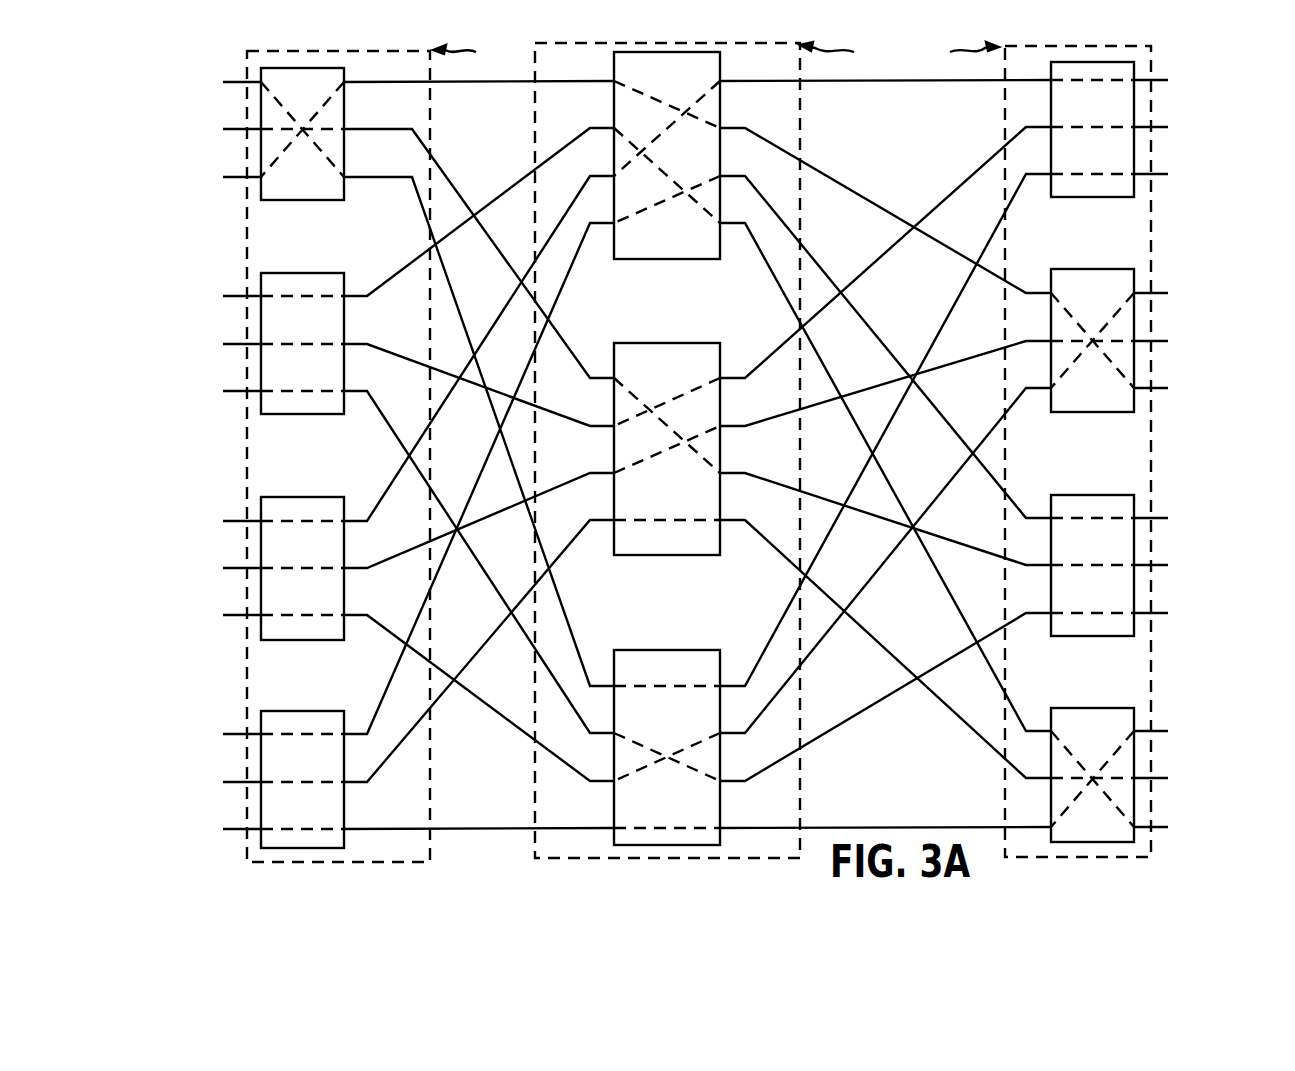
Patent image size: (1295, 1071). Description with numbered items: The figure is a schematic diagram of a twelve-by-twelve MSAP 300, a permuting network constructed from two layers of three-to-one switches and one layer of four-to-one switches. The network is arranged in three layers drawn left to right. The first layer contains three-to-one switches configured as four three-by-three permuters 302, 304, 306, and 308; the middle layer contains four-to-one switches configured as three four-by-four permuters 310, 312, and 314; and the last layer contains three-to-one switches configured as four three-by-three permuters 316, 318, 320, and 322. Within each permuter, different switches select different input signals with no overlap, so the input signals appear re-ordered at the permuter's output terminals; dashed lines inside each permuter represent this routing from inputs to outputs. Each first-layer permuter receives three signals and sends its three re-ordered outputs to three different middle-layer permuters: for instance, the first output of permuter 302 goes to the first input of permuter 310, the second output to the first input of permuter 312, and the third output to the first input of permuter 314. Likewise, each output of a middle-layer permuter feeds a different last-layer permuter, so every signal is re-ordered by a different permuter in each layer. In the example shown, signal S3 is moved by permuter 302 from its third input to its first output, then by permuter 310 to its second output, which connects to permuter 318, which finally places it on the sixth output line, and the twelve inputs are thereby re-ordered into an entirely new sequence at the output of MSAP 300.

The 12-by-12 MSAP 300 is at (1192, 437).
The 3-by-3 permuter 302 is at (305, 200).
The 3-by-3 permuter 304 is at (302, 414).
The 3-by-3 permuter 306 is at (308, 640).
The 3-by-3 permuter 308 is at (344, 840).
The 4-by-4 permuter 310 is at (680, 259).
The 4-by-4 permuter 312 is at (690, 555).
The 4-by-4 permuter 314 is at (720, 840).
The 3-by-3 permuter 316 is at (1065, 197).
The 3-by-3 permuter 318 is at (1070, 412).
The 3-by-3 permuter 320 is at (1068, 636).
The 3-by-3 permuter 322 is at (1134, 840).